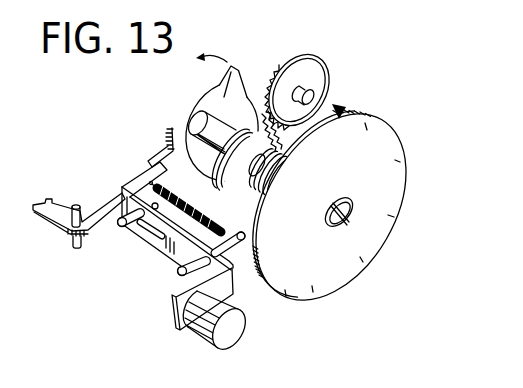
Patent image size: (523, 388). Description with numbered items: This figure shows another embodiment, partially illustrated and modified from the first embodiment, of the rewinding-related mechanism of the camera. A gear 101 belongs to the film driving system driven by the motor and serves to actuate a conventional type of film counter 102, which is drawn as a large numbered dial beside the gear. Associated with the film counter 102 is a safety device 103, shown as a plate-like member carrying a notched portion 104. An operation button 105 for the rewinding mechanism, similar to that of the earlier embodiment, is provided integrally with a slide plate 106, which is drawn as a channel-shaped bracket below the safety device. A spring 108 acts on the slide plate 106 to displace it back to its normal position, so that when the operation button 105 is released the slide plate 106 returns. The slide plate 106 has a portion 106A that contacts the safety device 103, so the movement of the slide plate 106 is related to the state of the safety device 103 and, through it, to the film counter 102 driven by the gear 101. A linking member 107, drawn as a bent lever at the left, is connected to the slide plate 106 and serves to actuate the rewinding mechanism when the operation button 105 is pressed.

The gear 101 is at (313, 76).
The film counter 102 is at (382, 162).
The safety device 103 is at (234, 100).
The notched portion 104 is at (157, 148).
The operation button 105 is at (243, 330).
The slide plate 106 is at (167, 249).
The portion of the slide plate 106A is at (137, 179).
The linking member 107 is at (54, 207).
The spring 108 is at (200, 214).